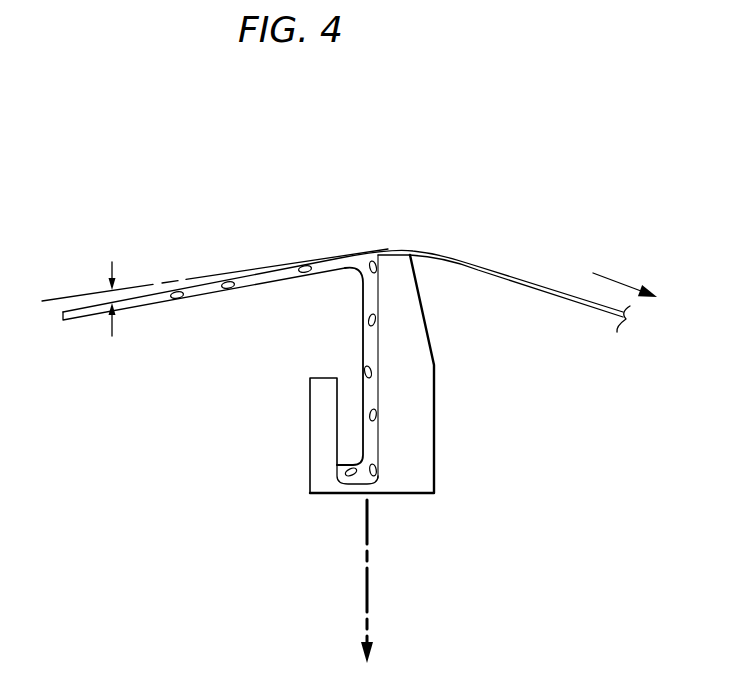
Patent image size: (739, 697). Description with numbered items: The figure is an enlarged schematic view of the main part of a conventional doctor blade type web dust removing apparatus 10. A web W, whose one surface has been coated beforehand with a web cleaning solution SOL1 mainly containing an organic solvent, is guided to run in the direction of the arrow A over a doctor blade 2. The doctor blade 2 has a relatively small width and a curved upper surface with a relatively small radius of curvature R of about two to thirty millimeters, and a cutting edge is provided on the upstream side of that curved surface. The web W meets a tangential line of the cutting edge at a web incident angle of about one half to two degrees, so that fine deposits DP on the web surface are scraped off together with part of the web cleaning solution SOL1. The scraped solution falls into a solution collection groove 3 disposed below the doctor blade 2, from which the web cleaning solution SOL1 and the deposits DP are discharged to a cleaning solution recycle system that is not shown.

The bent plate assembly 10 is at (300, 228).
The doctor blade 2 is at (427, 318).
The solution collection groove 3 is at (337, 442).
The web W is at (520, 280).
The arrow A (web running direction) A is at (620, 280).
The radius of curvature R is at (394, 268).
The fine deposits DP is at (227, 290).
The web cleaning solution SOL1 is at (365, 370).